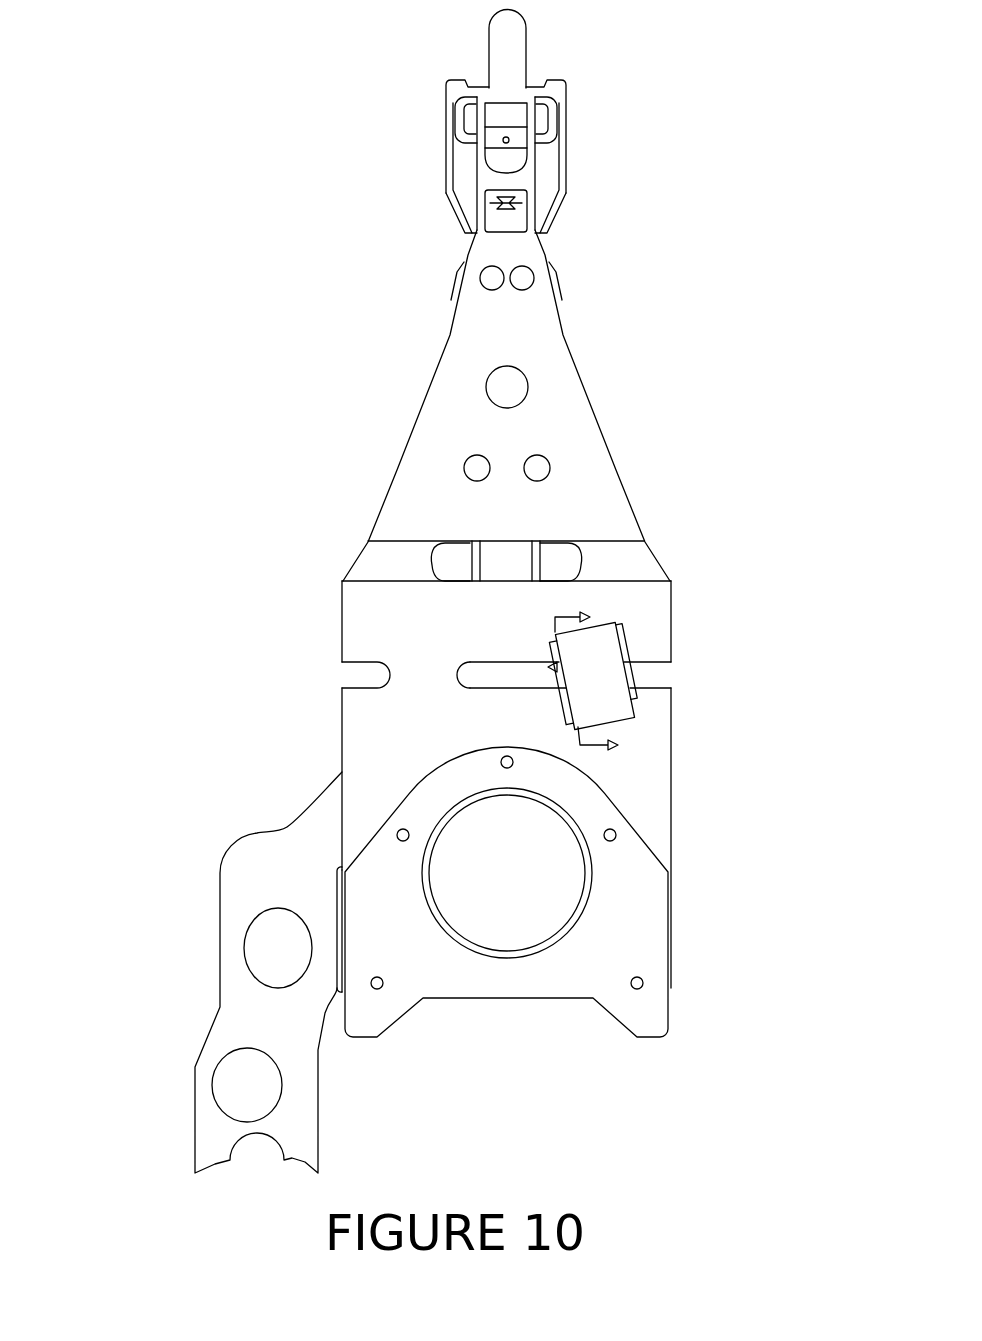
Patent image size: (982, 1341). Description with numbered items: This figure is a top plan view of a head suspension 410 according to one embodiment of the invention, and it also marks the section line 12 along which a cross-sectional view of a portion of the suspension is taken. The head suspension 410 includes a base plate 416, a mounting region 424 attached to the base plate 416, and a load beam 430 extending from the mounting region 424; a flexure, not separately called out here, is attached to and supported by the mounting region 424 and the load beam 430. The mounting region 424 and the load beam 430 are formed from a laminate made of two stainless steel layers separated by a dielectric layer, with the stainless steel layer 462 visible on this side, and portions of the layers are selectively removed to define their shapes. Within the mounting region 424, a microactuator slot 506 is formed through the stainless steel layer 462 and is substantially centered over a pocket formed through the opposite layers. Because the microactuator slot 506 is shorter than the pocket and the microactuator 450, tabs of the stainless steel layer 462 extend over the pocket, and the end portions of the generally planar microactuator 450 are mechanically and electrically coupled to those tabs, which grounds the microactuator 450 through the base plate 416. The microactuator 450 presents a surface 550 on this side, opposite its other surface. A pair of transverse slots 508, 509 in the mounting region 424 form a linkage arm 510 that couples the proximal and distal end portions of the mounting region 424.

The head suspension 410 is at (430, 592).
The base plate 416 is at (647, 960).
The mounting region 424 is at (340, 718).
The load beam 430 is at (445, 397).
The microactuator 450 is at (626, 703).
The stainless steel layer 462 is at (570, 407).
The microactuator slot 506 is at (637, 678).
The transverse slot 508 is at (363, 672).
The transverse slot 509 is at (497, 673).
The linkage arm 510 is at (428, 672).
The surface 550 is at (614, 621).
The section line 12- 12 is at (603, 671).